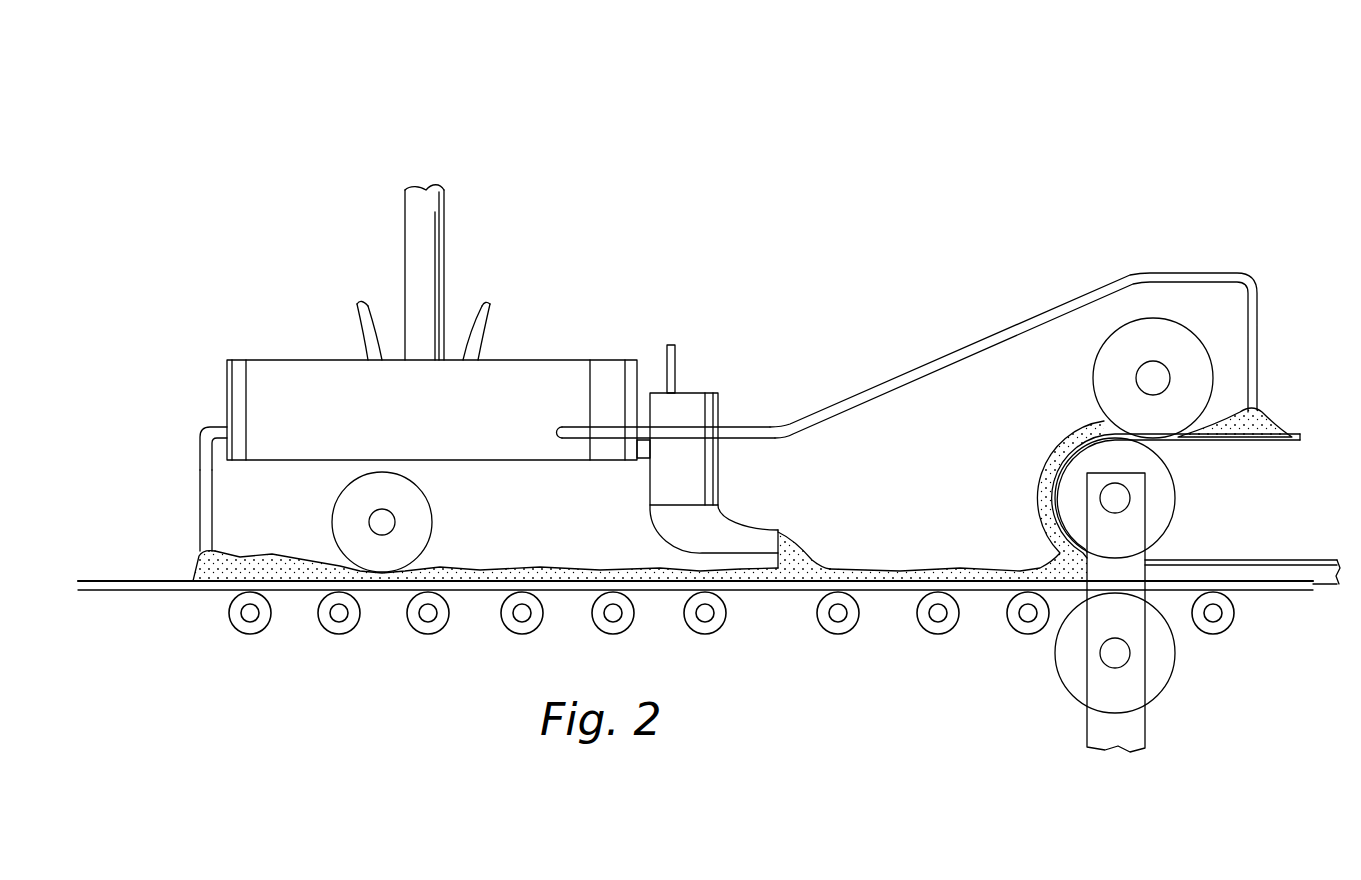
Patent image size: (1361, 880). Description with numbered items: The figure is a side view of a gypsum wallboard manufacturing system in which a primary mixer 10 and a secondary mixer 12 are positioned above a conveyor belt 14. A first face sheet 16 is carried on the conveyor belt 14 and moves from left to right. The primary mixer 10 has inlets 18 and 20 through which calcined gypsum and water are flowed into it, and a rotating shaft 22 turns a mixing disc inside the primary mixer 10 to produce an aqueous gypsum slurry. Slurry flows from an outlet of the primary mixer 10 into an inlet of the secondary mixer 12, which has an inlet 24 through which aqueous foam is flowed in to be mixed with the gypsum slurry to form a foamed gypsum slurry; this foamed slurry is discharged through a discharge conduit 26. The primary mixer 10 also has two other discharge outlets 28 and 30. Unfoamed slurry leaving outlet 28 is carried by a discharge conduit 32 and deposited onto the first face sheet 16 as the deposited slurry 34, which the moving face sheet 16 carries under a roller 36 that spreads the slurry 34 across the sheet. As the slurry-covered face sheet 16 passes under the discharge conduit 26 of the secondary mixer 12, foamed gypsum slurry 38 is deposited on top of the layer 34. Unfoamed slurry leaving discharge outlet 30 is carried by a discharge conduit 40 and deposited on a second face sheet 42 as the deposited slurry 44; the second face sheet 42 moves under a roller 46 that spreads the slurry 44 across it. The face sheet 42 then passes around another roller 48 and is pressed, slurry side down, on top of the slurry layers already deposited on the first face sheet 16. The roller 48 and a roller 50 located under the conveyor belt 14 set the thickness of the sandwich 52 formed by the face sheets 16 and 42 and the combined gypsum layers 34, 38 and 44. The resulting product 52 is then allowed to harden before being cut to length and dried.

The primary mixer 10 is at (292, 360).
The secondary mixer 12 is at (693, 393).
The conveyor belt 14 is at (207, 593).
The first face sheet 16 is at (100, 580).
The inlet 18 is at (366, 303).
The inlet 20 is at (491, 318).
The rotating shaft 22 is at (444, 220).
The inlet 24 is at (667, 355).
The discharge conduit 26 is at (768, 528).
The discharge outlet 28 is at (218, 427).
The discharge outlet 30 is at (572, 427).
The discharge conduit 32 is at (200, 478).
The deposited slurry 34 is at (198, 556).
The roller 36 is at (432, 508).
The foamed gypsum slurry 38 is at (803, 555).
The discharge conduit 40 is at (962, 348).
The second face sheet 42 is at (1292, 437).
The deposited slurry 44 is at (1262, 410).
The roller 46 is at (1093, 378).
The roller 48 is at (1176, 506).
The roller 50 is at (1177, 662).
The sandwich 52 is at (1305, 560).